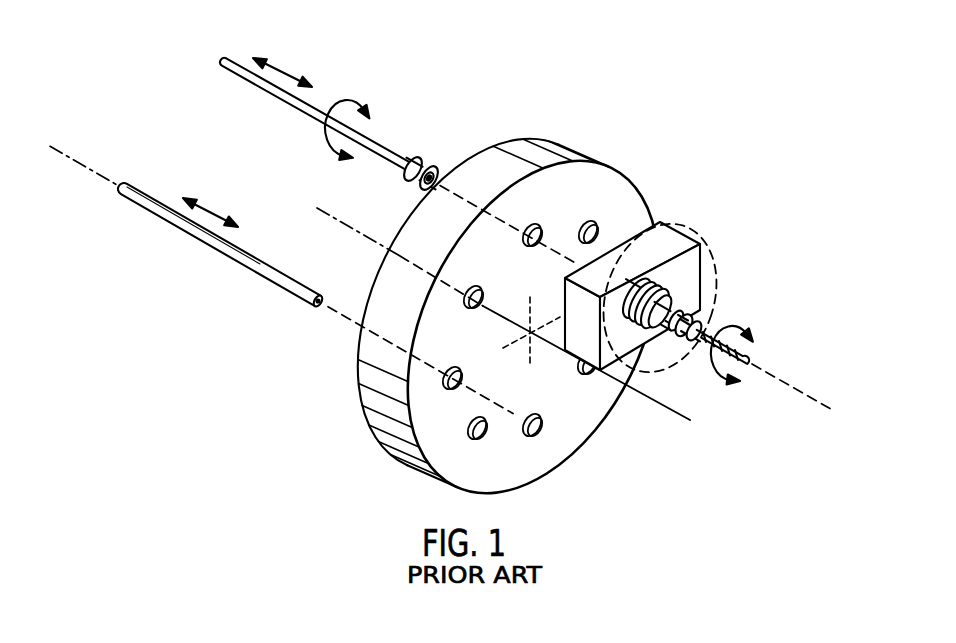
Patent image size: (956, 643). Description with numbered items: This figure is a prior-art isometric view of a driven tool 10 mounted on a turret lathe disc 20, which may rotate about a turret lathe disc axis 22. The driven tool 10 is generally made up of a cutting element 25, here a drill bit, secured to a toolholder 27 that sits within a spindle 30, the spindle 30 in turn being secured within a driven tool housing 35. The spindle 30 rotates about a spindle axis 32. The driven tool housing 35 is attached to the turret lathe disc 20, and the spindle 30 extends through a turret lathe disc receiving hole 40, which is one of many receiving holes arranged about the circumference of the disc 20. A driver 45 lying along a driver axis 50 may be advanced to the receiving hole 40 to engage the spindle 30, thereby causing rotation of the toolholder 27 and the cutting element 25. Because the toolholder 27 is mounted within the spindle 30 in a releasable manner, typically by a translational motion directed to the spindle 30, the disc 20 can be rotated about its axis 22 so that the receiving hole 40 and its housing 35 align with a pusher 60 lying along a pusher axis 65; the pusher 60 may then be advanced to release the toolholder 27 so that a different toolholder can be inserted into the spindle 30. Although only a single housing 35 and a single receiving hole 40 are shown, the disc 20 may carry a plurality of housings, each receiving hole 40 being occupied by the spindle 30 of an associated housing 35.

The driven tool 10 is at (727, 313).
The turret lathe disc 20 is at (566, 158).
The turret lathe disc axis 22 is at (657, 402).
The cutting element 25 is at (737, 358).
The toolholder 27 is at (699, 306).
The spindle 30 is at (657, 338).
The spindle axis 32 is at (789, 389).
The driven tool housing 35 is at (701, 272).
The turret lathe disc receiving hole 40 is at (694, 226).
The driver 45 is at (236, 73).
The driver axis 50 is at (462, 193).
The pusher 60 is at (193, 235).
The pusher axis 65 is at (76, 158).